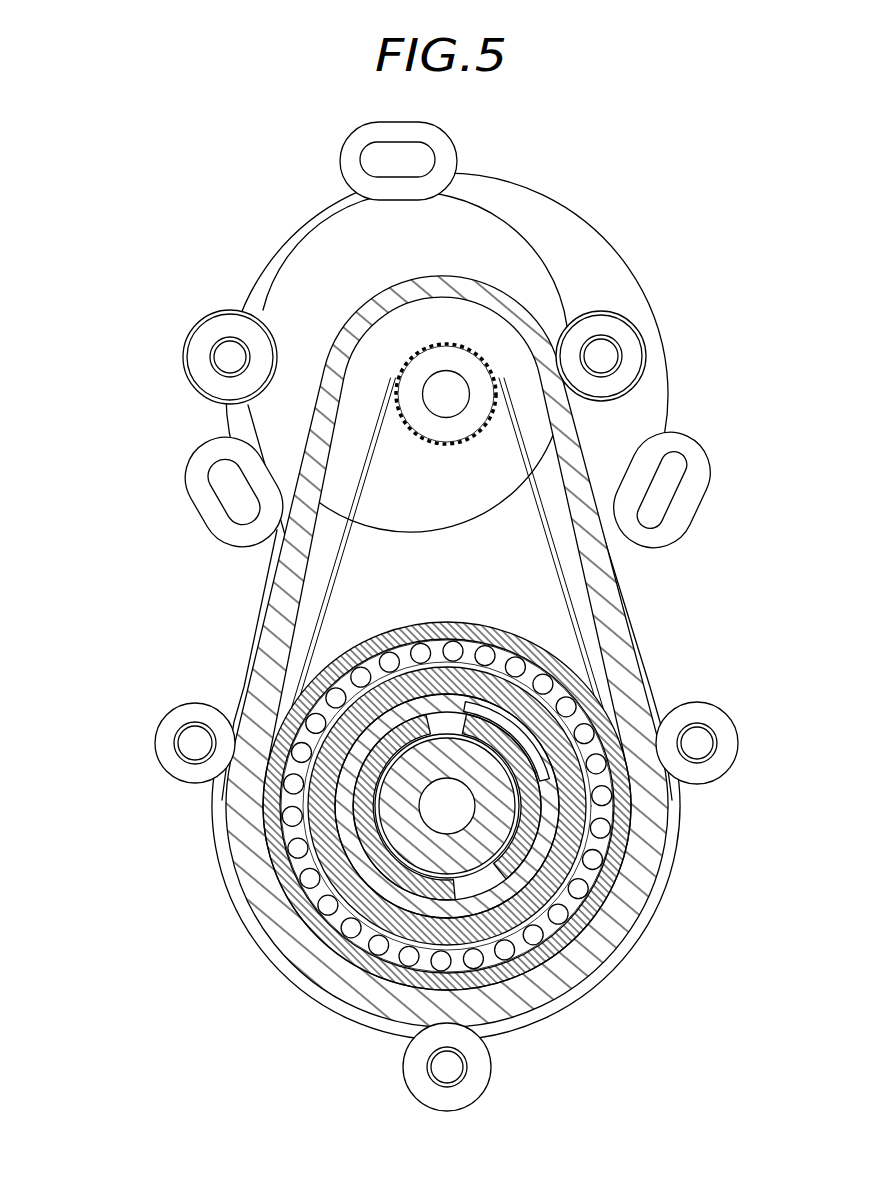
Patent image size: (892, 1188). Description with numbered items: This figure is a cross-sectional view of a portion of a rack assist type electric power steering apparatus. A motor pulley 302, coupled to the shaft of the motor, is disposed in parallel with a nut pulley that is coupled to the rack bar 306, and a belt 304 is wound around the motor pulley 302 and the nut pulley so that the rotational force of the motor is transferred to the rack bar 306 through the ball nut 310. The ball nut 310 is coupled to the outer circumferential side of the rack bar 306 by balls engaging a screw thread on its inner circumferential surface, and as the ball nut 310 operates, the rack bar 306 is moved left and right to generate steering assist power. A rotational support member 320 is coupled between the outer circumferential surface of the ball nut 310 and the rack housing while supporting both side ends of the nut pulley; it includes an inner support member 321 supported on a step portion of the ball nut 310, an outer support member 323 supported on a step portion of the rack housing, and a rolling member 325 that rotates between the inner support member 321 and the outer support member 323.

The motor pulley 302 is at (482, 375).
The belt 304 is at (558, 590).
The rack bar 306 is at (612, 970).
The ball nut 310 is at (387, 890).
The rotational support member 320 is at (420, 807).
The inner support member 321 is at (330, 923).
The outer support member 323 is at (300, 868).
The rolling member 325 is at (642, 867).